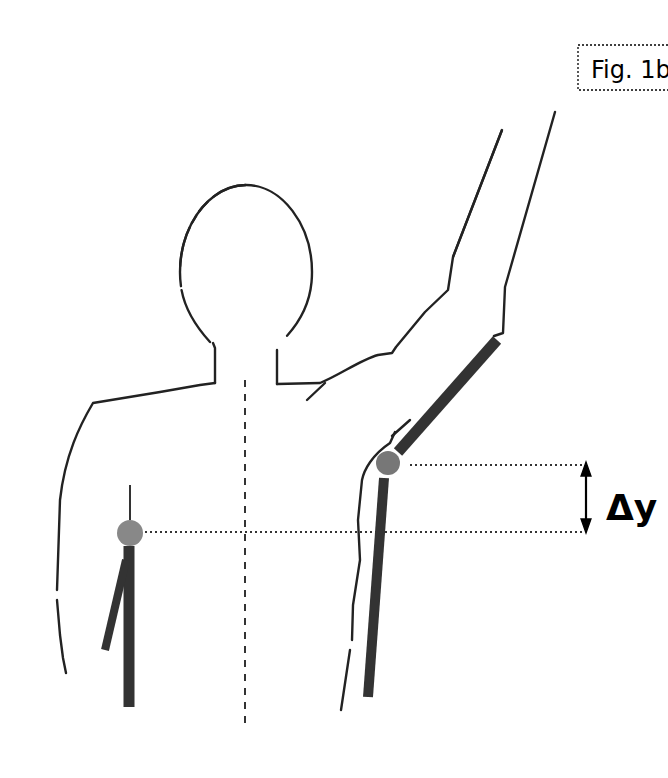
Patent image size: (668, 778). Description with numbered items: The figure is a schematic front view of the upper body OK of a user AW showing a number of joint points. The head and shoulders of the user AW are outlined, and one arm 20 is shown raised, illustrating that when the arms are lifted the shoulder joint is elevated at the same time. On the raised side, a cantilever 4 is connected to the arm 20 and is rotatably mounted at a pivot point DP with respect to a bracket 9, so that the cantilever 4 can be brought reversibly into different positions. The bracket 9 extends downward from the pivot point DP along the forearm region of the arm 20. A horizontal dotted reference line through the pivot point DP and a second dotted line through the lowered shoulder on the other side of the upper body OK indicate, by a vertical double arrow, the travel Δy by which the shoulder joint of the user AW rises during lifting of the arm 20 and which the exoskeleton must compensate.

The arm 20 is at (467, 255).
The cantilever 4 is at (466, 390).
The bracket 9 is at (378, 614).
The pivot point DP is at (395, 482).
The upper body OK is at (208, 505).
The user AW is at (208, 239).